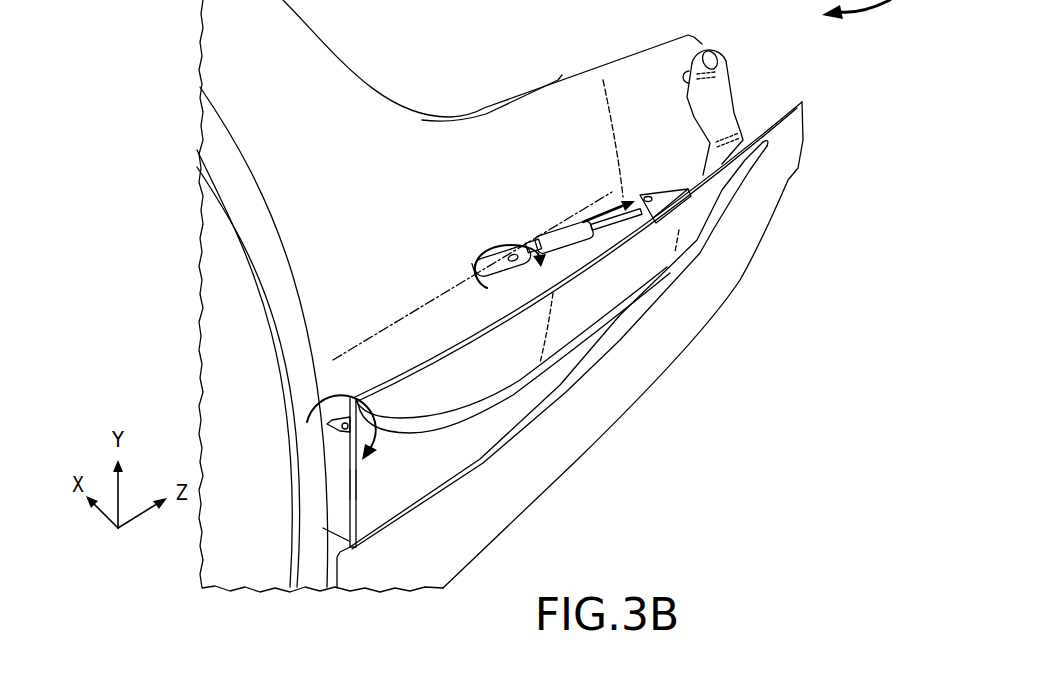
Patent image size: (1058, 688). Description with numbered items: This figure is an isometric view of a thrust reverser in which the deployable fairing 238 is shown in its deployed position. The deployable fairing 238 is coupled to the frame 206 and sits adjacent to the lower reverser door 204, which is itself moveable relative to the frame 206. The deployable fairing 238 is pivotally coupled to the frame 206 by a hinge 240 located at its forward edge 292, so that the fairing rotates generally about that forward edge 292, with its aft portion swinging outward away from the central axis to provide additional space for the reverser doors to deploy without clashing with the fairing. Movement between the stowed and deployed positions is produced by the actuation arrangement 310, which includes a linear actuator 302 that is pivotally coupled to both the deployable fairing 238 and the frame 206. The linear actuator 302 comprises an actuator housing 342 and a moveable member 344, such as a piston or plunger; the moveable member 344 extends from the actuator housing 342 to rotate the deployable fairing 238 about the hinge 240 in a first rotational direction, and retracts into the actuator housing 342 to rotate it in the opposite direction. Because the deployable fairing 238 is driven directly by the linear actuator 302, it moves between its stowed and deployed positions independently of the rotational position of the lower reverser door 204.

The lower reverser door 204 is at (677, 328).
The frame 206 is at (382, 205).
The deployable fairing 238 is at (585, 306).
The hinge 240 is at (328, 425).
The forward edge 292 is at (353, 482).
The linear actuator 302 is at (550, 238).
The actuation arrangement 310 is at (582, 175).
The actuator housing 342 is at (578, 238).
The moveable member 344 is at (613, 222).